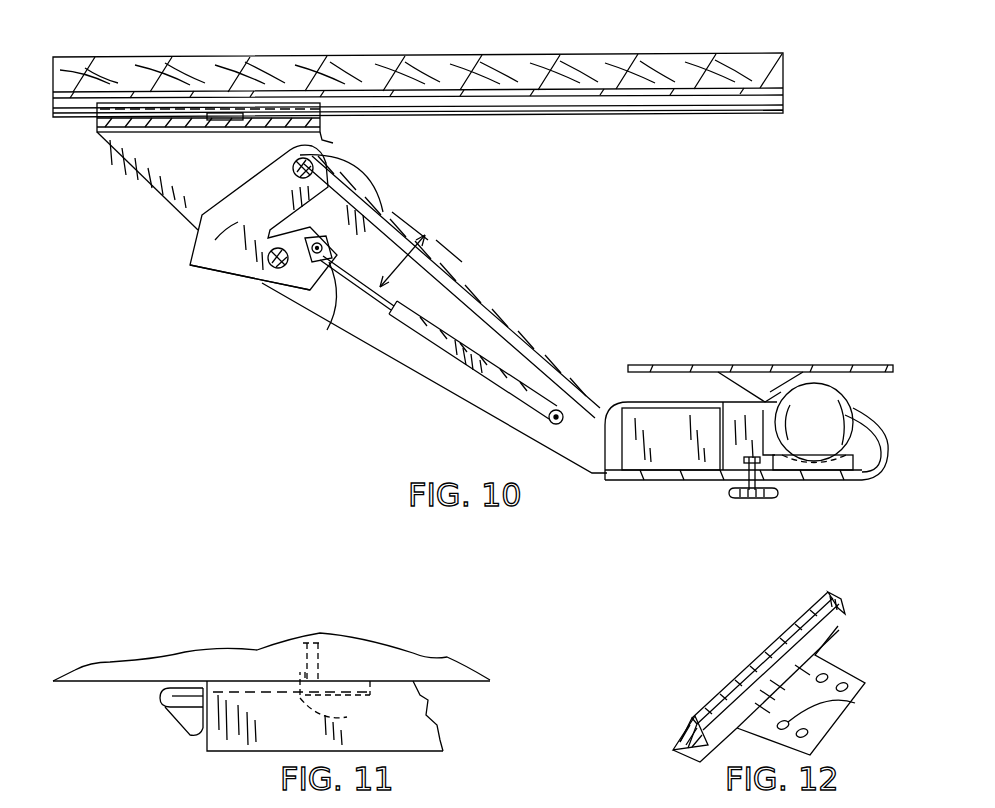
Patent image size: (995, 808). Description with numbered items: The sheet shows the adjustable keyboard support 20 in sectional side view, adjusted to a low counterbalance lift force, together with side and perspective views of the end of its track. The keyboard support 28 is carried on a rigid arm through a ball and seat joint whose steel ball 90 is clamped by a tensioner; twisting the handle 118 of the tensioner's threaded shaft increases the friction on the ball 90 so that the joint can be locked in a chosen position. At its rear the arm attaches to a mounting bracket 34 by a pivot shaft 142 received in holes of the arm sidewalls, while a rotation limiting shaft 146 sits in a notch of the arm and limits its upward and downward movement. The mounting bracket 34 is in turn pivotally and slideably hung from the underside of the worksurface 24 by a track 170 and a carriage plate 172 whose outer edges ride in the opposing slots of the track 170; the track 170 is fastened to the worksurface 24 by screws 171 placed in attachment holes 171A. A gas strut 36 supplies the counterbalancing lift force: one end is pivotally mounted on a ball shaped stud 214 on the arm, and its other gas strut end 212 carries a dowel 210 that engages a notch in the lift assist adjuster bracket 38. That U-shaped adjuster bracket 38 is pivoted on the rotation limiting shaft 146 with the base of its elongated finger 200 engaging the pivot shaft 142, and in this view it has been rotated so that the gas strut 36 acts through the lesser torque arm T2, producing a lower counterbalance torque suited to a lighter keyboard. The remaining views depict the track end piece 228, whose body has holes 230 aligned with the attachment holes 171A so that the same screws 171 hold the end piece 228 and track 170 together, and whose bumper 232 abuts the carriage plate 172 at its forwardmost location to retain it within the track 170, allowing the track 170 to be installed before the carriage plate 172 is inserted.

In FIG. 10, the adjustable keyboard support 20 is at (790, 214).
In FIG. 10, the worksurface 24 is at (487, 56).
In FIG. 11, the worksurface 24 is at (128, 673).
In FIG. 10, the keyboard support 28 is at (812, 364).
In FIG. 10, the mounting bracket 34 is at (146, 189).
In FIG. 10, the gas strut 36 is at (470, 390).
In FIG. 10, the lift assist adjuster bracket 38 is at (223, 278).
In FIG. 10, the ball 90 is at (838, 396).
In FIG. 10, the handle 118 is at (755, 497).
In FIG. 10, the pivot shaft 142 is at (320, 157).
In FIG. 10, the rotation limiting shaft 146 is at (271, 270).
In FIG. 10, the track 170 is at (583, 117).
In FIG. 11, the track 170 is at (443, 751).
In FIG. 11, the screws 171 is at (331, 633).
In FIG. 11, the attachment holes 171A is at (320, 677).
In FIG. 10, the carriage plate 172 is at (330, 127).
In FIG. 10, the elongated finger 200 is at (200, 243).
In FIG. 10, the dowel 210 is at (330, 246).
In FIG. 10, the gas strut end 212 is at (328, 320).
In FIG. 10, the ball shaped stud 214 is at (556, 428).
In FIG. 11, the track end piece 228 is at (177, 688).
In FIG. 12, the track end piece 228 is at (712, 697).
In FIG. 11, the holes 230 is at (335, 708).
In FIG. 12, the holes 230 is at (848, 692).
In FIG. 11, the bumper 232 is at (180, 724).
In FIG. 12, the bumper 232 is at (686, 733).
In FIG. 10, the torque arm T2 is at (408, 269).